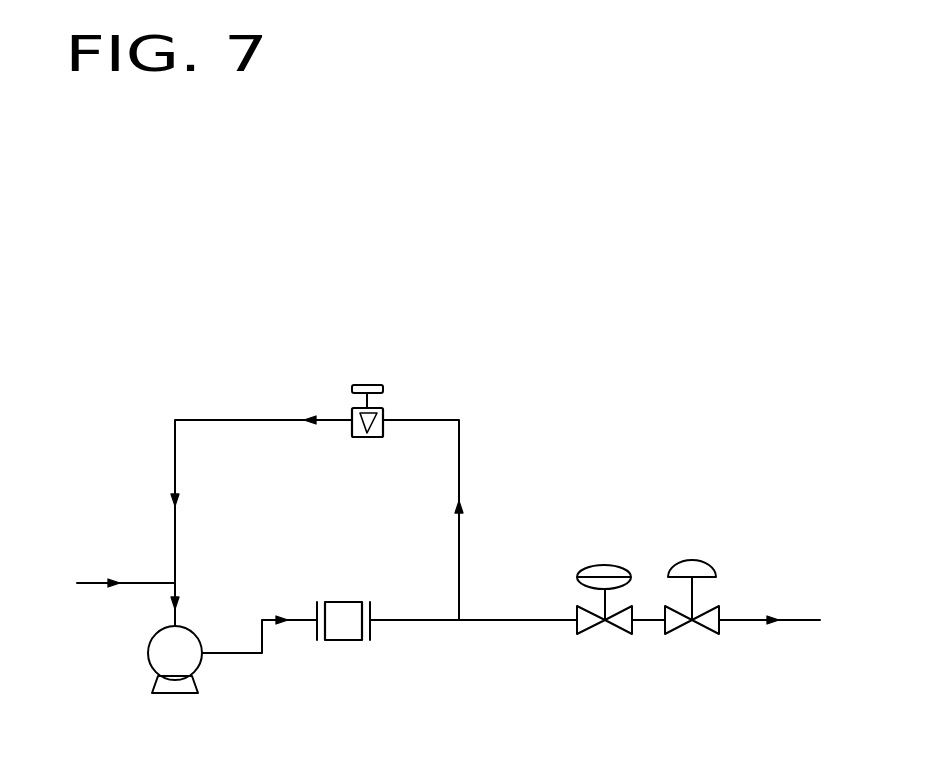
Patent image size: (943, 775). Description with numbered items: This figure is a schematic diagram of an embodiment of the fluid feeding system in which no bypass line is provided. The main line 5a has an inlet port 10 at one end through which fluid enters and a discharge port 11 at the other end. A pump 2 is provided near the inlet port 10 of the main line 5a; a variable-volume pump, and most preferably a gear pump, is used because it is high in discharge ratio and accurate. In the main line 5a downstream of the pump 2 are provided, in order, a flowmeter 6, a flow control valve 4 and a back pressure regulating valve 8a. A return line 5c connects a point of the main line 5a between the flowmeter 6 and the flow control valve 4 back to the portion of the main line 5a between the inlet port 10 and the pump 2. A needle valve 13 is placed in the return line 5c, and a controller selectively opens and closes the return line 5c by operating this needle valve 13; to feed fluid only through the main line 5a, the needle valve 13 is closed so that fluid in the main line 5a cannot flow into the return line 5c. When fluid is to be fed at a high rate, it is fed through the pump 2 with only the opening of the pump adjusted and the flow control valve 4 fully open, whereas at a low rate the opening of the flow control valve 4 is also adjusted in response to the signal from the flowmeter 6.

The pump 2 is at (148, 663).
The flow control valve 4 is at (636, 608).
The main line 5a is at (523, 620).
The return line 5c is at (245, 418).
The flowmeter 6 is at (347, 642).
The back pressure regulating valve 8a is at (720, 605).
The inlet port 10 is at (70, 582).
The discharge port 11 is at (828, 618).
The needle valve 13 is at (383, 415).